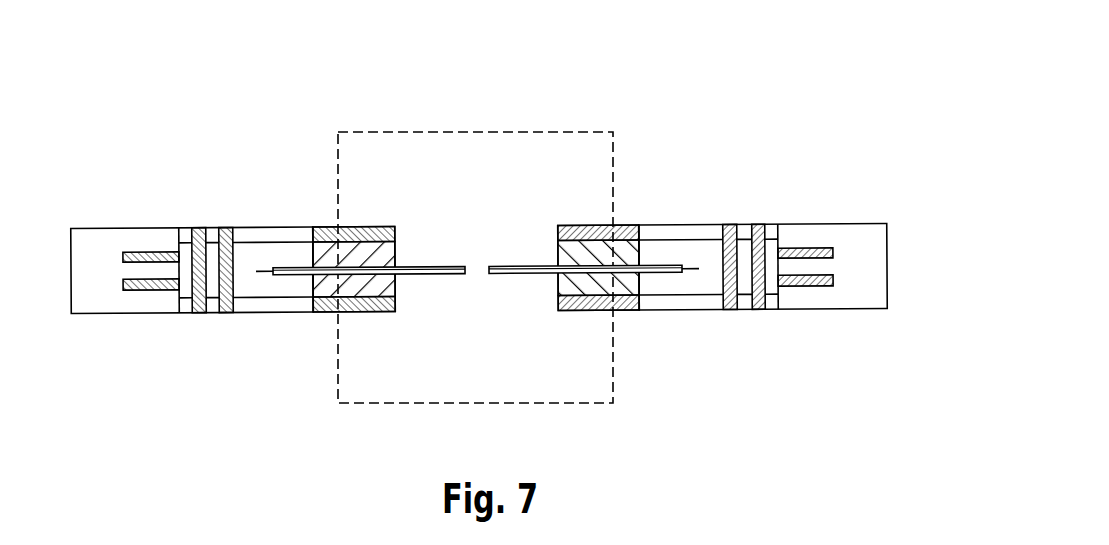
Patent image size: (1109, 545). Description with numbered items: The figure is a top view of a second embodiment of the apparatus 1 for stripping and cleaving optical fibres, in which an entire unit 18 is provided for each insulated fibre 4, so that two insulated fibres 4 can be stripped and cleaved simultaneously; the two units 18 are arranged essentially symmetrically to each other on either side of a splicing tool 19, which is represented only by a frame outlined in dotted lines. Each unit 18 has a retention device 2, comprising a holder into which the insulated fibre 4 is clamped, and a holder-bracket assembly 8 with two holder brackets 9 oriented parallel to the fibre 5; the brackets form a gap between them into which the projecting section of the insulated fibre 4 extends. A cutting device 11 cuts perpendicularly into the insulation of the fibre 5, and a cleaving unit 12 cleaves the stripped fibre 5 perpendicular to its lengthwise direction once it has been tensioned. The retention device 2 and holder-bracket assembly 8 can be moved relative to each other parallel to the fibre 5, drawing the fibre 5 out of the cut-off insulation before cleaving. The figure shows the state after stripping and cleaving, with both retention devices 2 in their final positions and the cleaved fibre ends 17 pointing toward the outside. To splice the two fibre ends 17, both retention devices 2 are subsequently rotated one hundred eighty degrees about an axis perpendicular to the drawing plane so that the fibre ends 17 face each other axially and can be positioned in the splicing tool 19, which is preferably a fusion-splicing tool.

The apparatus 1 is at (737, 96).
The retention device 2 is at (321, 222).
The insulated fibre 4 is at (419, 281).
The fibre 5 is at (256, 283).
The holder-bracket assembly 8 is at (94, 249).
The holder brackets 9 is at (124, 252).
The cutting device 11 is at (198, 320).
The cleaving unit 12 is at (226, 320).
The fibre end 17 is at (258, 272).
The unit 18 is at (165, 212).
The splicing tool 19 is at (614, 163).